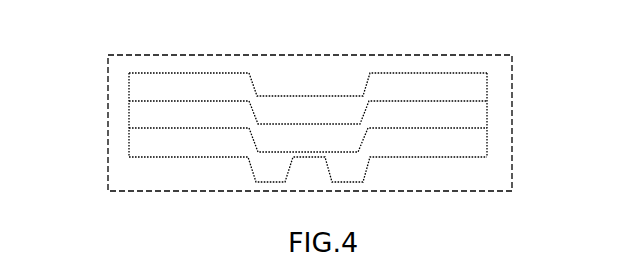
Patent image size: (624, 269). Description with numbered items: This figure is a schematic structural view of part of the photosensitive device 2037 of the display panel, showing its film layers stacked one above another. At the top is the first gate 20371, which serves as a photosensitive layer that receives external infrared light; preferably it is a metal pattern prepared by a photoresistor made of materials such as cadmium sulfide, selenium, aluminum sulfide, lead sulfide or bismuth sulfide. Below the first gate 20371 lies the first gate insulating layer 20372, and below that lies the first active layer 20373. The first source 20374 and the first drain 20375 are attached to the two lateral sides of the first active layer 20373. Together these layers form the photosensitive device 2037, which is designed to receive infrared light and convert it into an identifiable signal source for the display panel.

The photosensitive device 2037 is at (167, 38).
The first gate 20371 is at (313, 88).
The first gate insulating layer 20372 is at (452, 85).
The first active layer 20373 is at (452, 115).
The first source 20374 is at (165, 139).
The first drain 20375 is at (452, 145).